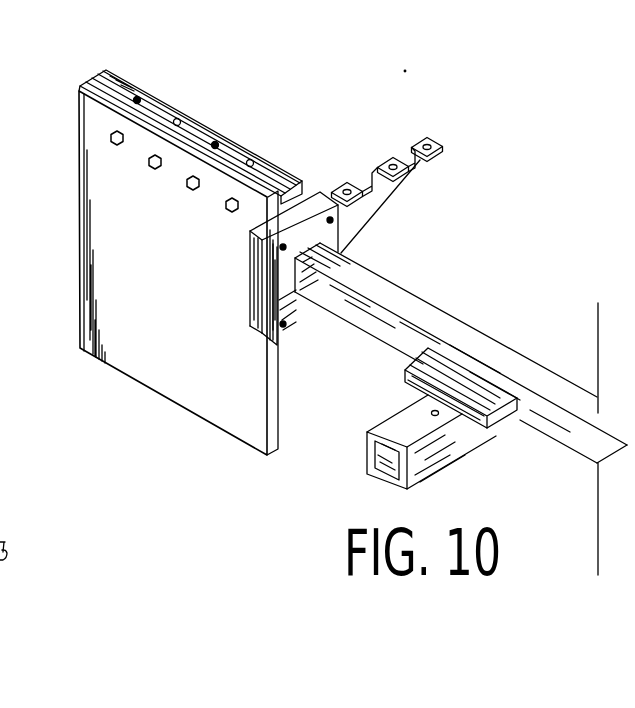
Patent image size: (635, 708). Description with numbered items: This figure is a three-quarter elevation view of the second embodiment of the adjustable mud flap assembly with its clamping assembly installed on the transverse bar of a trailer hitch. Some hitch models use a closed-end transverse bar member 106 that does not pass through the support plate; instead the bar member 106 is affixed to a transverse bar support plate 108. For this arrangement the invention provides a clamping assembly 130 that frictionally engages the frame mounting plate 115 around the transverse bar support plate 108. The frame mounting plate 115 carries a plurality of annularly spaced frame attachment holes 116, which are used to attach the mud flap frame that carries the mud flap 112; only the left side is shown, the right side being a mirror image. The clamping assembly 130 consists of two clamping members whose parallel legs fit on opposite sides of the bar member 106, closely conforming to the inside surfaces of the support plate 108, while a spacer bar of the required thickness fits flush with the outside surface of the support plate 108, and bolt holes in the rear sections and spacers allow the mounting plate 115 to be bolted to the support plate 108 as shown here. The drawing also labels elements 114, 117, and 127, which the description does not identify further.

The transverse bar member 106 is at (487, 335).
The transverse bar support plate 108 is at (410, 152).
The mud flap 112 is at (113, 318).
The block 114 is at (305, 186).
The frame mounting plate 115 is at (290, 305).
The frame attachment holes 116 is at (330, 220).
The bar 117 is at (92, 80).
The holes 127 is at (249, 160).
The clamping assembly 130 is at (352, 246).